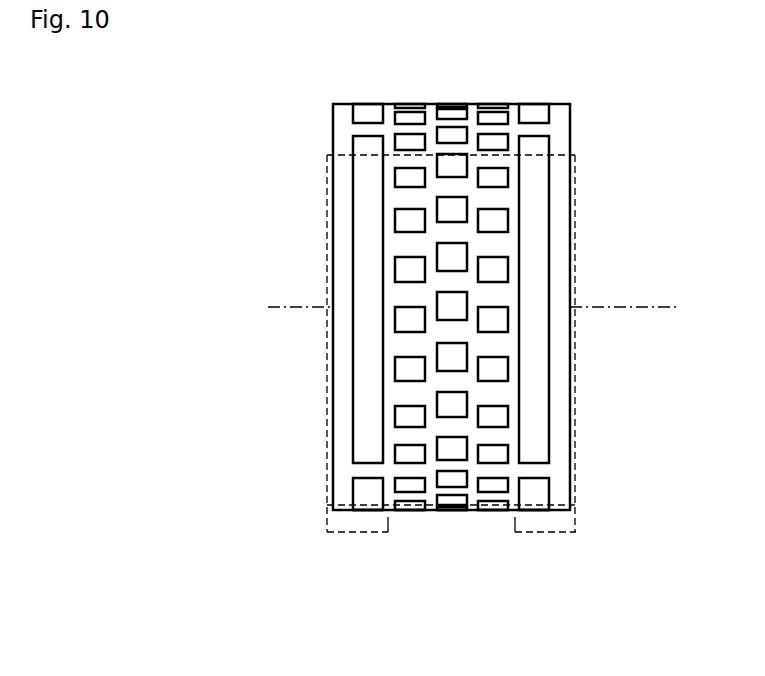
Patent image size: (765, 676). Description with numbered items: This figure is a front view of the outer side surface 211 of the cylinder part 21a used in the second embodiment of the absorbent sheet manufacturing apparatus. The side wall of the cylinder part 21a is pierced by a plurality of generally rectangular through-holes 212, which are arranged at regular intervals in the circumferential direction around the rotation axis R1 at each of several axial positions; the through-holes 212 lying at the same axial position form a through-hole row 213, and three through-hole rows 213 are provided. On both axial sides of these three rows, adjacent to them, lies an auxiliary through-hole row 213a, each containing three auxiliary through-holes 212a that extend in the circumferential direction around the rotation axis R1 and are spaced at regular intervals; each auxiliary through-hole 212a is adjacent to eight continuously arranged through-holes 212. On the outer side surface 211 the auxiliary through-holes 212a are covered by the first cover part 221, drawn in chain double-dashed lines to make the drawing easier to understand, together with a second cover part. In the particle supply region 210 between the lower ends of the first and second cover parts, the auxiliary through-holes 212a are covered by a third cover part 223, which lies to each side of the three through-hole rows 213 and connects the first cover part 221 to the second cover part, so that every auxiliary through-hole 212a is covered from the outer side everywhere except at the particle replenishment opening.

The cylinder part 21a is at (332, 132).
The outer side surface 211 is at (345, 227).
The through-hole 212 is at (497, 178).
The auxiliary through-hole 212a is at (538, 111).
The through-hole row 213 is at (407, 522).
The auxiliary through-hole row 213a is at (367, 518).
The particle supply region 210 is at (452, 517).
The first cover part 221 is at (575, 293).
The third cover part 223 is at (327, 528).
The rotation axis R1 is at (287, 305).